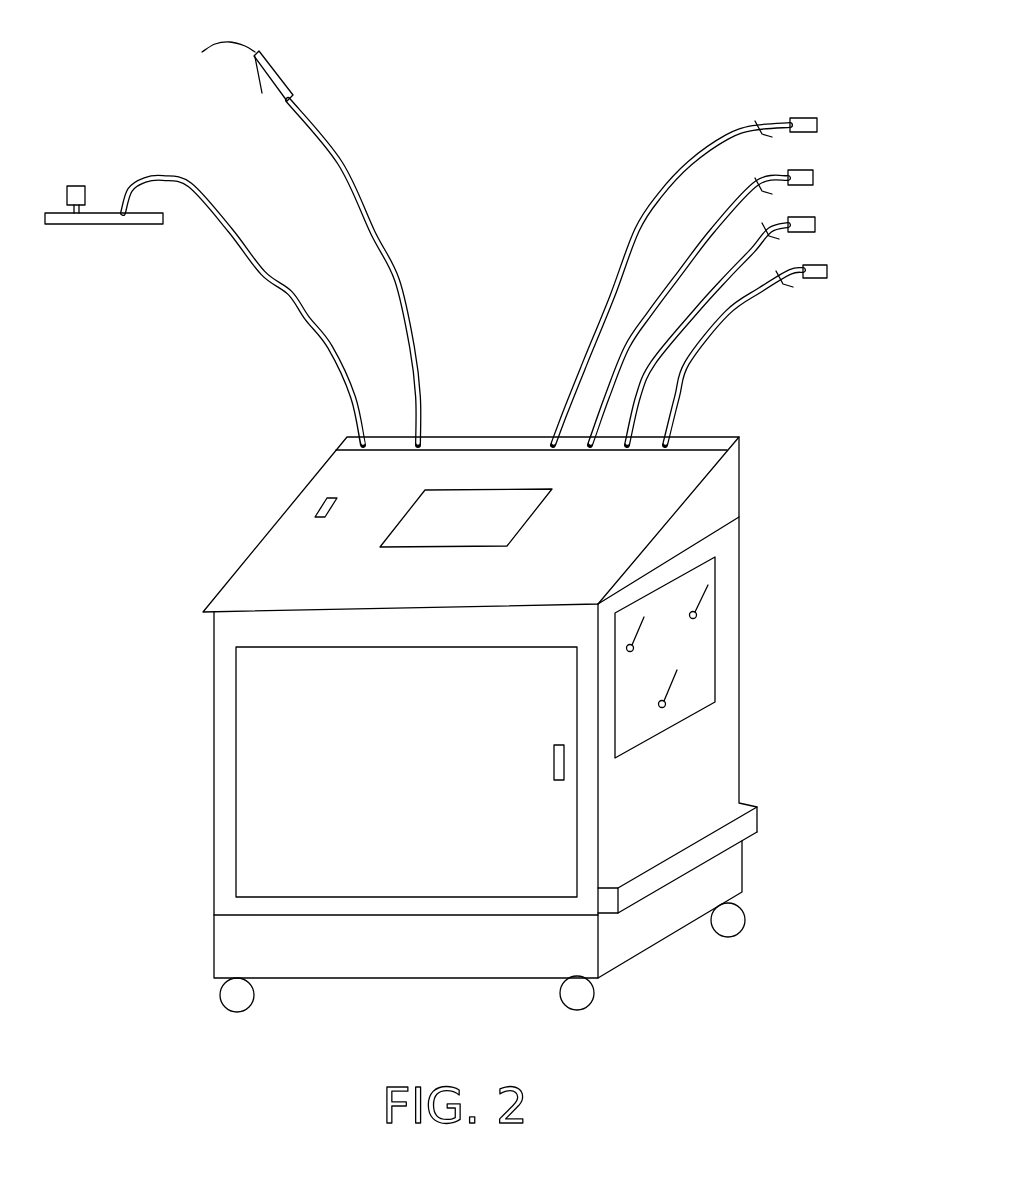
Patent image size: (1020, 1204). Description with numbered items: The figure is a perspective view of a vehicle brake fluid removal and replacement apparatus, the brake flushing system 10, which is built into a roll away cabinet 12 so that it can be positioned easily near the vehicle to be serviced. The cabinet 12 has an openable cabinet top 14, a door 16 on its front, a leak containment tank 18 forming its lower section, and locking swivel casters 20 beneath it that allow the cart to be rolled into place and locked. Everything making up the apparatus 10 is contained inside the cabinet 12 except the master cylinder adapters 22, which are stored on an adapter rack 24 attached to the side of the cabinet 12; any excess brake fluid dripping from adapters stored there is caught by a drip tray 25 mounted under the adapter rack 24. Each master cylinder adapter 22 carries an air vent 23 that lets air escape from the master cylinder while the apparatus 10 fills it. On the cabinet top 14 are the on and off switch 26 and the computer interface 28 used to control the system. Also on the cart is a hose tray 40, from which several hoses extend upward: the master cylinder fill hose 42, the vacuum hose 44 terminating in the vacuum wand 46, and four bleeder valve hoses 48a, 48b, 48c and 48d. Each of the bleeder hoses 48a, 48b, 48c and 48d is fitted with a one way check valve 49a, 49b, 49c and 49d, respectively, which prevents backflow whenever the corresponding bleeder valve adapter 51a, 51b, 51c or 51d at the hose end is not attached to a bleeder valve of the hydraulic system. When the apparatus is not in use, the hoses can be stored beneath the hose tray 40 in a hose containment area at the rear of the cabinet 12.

The brake flushing system 10 is at (500, 707).
The roll away cabinet 12 is at (718, 752).
The cabinet top 14 is at (717, 500).
The door 16 is at (260, 788).
The leak containment tank 18 is at (232, 945).
The locking swivel casters 20 is at (593, 993).
The master cylinder adapters 22 is at (76, 226).
The air vent 23 is at (75, 183).
The adapter rack 24 is at (700, 645).
The drip tray 25 is at (743, 825).
The on and off switch 26 is at (318, 508).
The computer interface 28 is at (413, 527).
The hose tray 40 is at (480, 437).
The master cylinder fill hose 42 is at (272, 280).
The vacuum hose 44 is at (367, 203).
The vacuum wand 46 is at (283, 80).
The bleeder valve hose 48a is at (692, 163).
The bleeder valve hose 48b is at (697, 248).
The bleeder valve hose 48c is at (700, 302).
The bleeder valve hose 48d is at (705, 347).
The one way check valve 49a is at (750, 123).
The one way check valve 49b is at (755, 190).
The one way check valve 49c is at (765, 233).
The one way check valve 49d is at (783, 287).
The bleeder valve adapter 51a is at (812, 113).
The bleeder valve adapter 51b is at (817, 175).
The bleeder valve adapter 51c is at (815, 223).
The bleeder valve adapter 51d is at (830, 267).